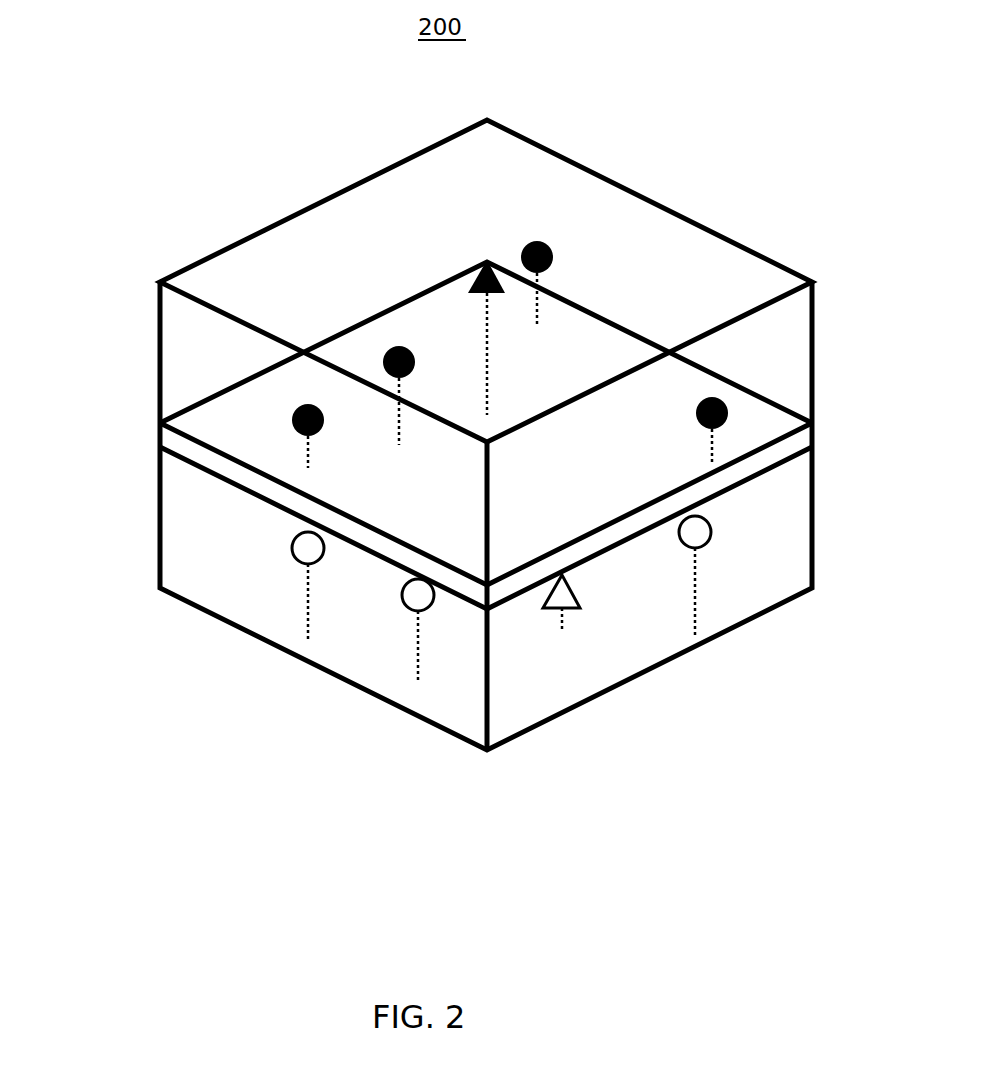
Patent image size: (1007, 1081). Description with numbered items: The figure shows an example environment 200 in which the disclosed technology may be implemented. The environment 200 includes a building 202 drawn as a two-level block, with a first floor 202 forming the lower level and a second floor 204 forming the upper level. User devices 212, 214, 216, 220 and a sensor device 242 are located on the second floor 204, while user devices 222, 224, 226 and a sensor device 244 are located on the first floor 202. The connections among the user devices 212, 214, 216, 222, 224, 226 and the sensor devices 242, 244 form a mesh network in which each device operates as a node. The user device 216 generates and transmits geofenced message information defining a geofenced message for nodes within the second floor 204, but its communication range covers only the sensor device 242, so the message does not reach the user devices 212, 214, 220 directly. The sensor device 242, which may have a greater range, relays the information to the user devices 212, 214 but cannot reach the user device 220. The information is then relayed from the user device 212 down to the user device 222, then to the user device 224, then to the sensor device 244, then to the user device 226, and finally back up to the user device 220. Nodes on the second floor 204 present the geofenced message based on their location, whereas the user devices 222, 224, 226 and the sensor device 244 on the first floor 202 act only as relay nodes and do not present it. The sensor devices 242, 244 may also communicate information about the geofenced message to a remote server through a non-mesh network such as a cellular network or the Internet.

The environment 200 is at (597, 120).
The building 202 is at (158, 507).
The second floor 204 is at (158, 315).
The user device 212 is at (293, 416).
The user device 214 is at (384, 362).
The user device 216 is at (522, 256).
The user device 220 is at (697, 413).
The user device 222 is at (292, 550).
The user device 224 is at (403, 600).
The user device 226 is at (680, 526).
The sensor device 242 is at (484, 261).
The sensor device 244 is at (562, 576).